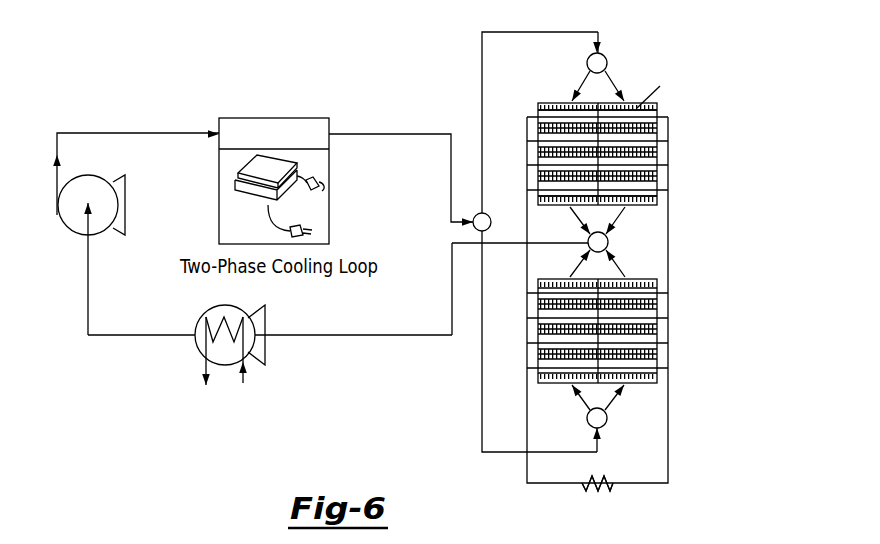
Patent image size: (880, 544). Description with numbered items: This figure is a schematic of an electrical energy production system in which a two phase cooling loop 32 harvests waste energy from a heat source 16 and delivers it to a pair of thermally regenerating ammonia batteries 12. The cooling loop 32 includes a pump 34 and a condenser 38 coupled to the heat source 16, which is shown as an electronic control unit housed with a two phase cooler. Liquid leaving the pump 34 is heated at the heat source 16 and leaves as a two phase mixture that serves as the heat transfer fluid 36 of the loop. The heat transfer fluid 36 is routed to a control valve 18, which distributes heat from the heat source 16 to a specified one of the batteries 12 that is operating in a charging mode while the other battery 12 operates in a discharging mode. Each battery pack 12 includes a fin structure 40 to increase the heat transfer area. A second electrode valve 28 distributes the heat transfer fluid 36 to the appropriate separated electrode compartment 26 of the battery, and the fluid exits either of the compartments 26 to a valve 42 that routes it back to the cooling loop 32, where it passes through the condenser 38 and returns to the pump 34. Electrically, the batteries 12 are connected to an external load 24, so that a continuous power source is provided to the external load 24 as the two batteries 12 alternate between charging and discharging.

The thermally regenerating ammonia battery 12 is at (556, 101).
The heat source 16 is at (255, 118).
The control valve 18 is at (489, 216).
The external load 24 is at (613, 488).
The separated electrode compartment 26 is at (540, 110).
The second electrode valve 28 is at (608, 63).
The cooling loop 32 is at (100, 133).
The pump 34 is at (74, 237).
The heat transfer fluid 36 is at (440, 134).
The condenser 38 is at (226, 366).
The fin structure 40 is at (650, 204).
The valve 42 is at (608, 243).